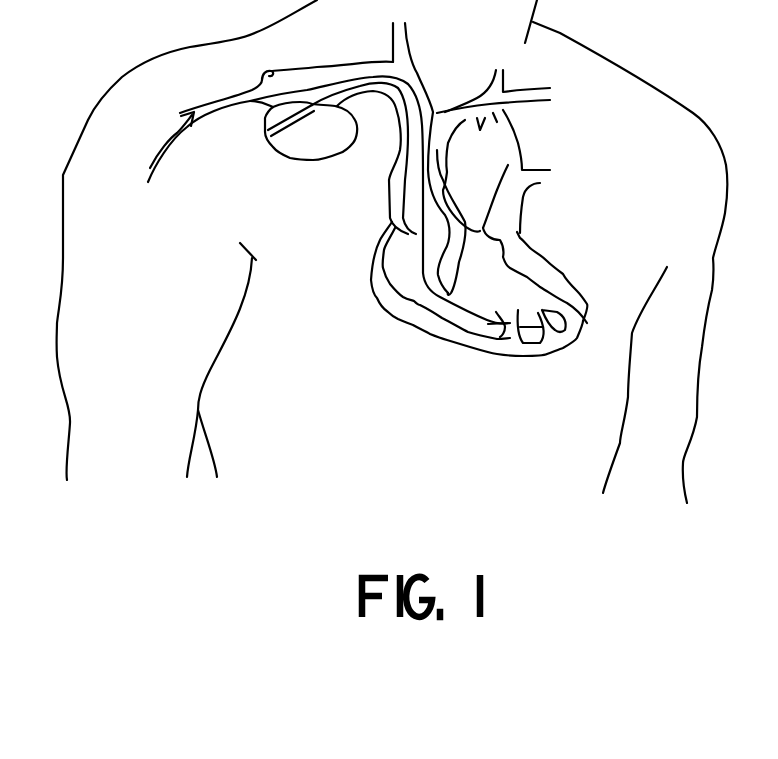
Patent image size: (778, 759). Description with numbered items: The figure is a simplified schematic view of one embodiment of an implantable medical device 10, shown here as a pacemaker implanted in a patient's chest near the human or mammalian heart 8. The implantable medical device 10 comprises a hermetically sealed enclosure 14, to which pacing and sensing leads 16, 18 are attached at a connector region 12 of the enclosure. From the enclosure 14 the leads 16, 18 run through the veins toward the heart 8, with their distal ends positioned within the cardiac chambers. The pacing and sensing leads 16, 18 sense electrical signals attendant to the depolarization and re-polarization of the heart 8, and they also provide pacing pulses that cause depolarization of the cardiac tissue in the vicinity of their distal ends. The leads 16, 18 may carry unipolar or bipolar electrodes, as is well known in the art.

The heart 8 is at (492, 356).
The implantable medical device 10 is at (248, 191).
The lead connector header 12 is at (275, 117).
The hermetically sealed enclosure 14 is at (328, 143).
The pacing and sensing lead 16 is at (403, 190).
The pacing and sensing lead 18 is at (423, 273).